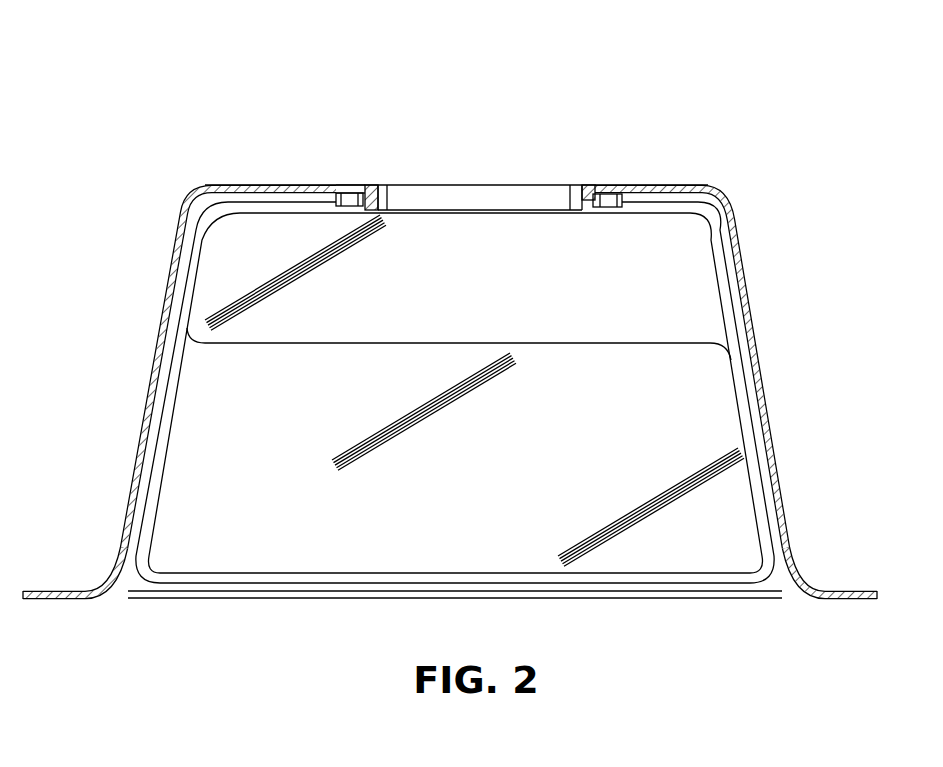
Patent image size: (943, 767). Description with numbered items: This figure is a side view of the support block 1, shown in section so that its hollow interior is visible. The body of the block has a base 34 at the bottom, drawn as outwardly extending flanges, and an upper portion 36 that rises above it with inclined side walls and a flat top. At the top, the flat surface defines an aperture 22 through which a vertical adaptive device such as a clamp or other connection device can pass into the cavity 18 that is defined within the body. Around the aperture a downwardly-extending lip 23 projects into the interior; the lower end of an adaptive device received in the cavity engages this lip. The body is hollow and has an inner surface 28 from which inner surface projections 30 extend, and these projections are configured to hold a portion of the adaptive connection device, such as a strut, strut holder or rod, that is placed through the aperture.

The support block 1 is at (450, 348).
The cavity 18 is at (323, 532).
The aperture 22 is at (467, 203).
The downwardly-extending lip 23 is at (383, 204).
The inner surface 28 is at (251, 200).
The inner surface projections 30 is at (357, 206).
The base 34 is at (55, 585).
The upper portion 36 is at (173, 239).